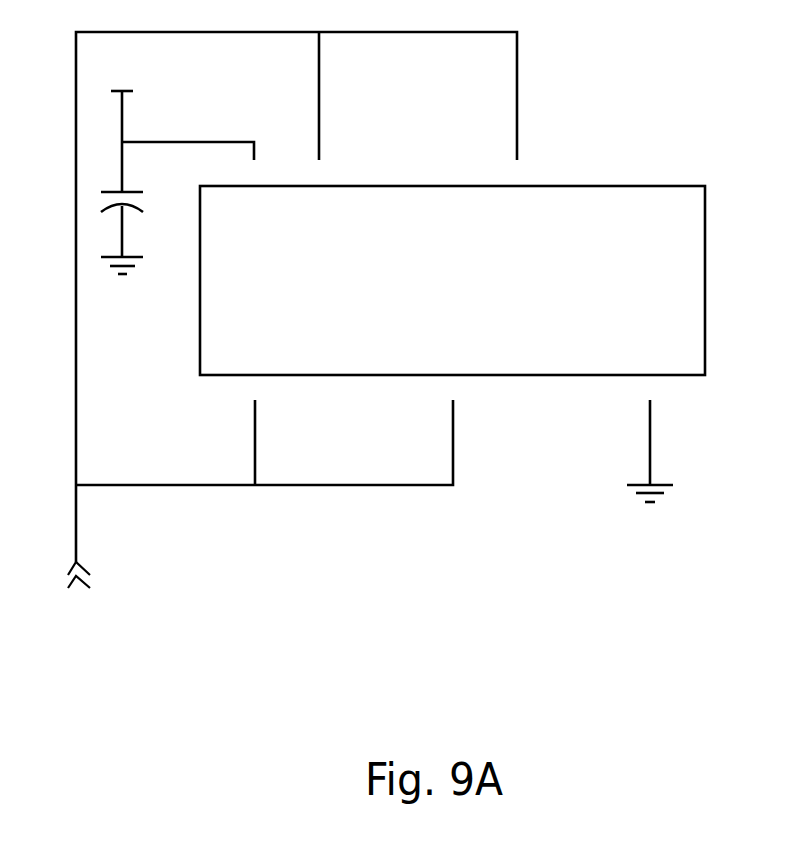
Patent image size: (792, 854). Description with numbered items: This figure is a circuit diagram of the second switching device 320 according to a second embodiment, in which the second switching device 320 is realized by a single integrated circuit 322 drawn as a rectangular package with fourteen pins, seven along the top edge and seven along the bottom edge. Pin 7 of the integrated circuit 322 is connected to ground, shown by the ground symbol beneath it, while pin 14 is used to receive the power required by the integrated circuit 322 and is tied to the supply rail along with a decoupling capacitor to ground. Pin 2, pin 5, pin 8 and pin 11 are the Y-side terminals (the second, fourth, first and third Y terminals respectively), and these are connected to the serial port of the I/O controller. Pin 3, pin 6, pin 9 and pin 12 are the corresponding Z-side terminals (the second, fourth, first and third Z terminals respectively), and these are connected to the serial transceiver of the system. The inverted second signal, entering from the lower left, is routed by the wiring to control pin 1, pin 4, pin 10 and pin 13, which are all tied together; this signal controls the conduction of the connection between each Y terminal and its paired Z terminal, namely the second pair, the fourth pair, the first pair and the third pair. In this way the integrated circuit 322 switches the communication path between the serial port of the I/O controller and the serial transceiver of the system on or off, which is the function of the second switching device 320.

The second switching device 320 is at (748, 654).
The integrated circuit 322 is at (697, 381).
The pin 1 is at (255, 400).
The pin 2 is at (321, 408).
The pin 3 is at (387, 408).
The pin 4 is at (453, 400).
The pin 5 is at (518, 408).
The pin 6 is at (585, 408).
The pin 7 is at (650, 400).
The pin 8 is at (649, 152).
The pin 9 is at (583, 152).
The pin 10 is at (517, 160).
The pin 11 is at (452, 153).
The pin 12 is at (386, 153).
The pin 13 is at (319, 160).
The pin 14 is at (254, 160).